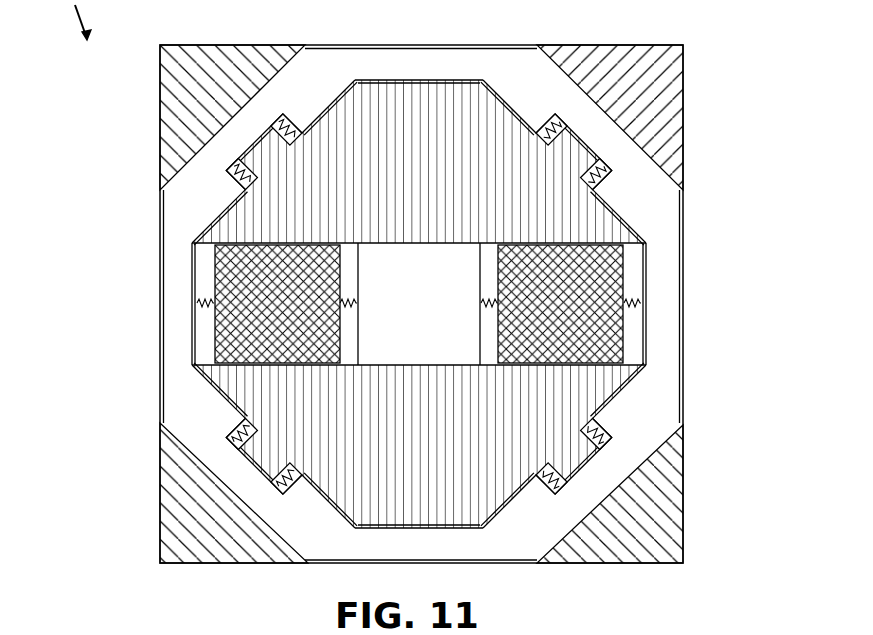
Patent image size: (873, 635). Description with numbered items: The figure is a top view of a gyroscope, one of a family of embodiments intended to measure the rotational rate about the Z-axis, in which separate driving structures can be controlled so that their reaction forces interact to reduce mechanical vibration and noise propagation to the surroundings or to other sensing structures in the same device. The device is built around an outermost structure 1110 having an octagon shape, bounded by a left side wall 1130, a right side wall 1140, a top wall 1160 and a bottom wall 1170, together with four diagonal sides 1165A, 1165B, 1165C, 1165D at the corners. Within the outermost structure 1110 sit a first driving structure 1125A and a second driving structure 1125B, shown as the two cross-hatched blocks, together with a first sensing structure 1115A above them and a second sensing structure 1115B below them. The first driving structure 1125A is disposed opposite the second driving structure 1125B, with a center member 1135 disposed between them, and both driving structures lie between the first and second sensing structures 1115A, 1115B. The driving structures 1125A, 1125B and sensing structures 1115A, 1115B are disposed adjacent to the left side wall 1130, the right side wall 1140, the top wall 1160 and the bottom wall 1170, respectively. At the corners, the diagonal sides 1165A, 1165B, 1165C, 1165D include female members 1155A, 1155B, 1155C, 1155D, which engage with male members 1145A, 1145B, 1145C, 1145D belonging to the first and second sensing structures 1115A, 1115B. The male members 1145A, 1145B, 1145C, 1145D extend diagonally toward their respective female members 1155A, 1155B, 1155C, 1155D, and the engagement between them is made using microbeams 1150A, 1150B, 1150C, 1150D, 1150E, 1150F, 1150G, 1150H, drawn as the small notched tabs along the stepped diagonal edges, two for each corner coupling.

The outermost structure 1110 is at (377, 58).
The first sensing structure 1115A is at (450, 110).
The second sensing structure 1115B is at (445, 525).
The first driving structure 1125A is at (315, 284).
The second driving structure 1125B is at (600, 284).
The left side wall 1130 is at (180, 308).
The center member 1135 is at (450, 312).
The right side wall 1140 is at (660, 298).
The male member 1145A is at (278, 162).
The male member 1145B is at (567, 158).
The male member 1145C is at (570, 457).
The male member 1145D is at (265, 462).
The microbeam 1150A is at (250, 172).
The microbeam 1150B is at (290, 133).
The microbeam 1150C is at (555, 130).
The microbeam 1150D is at (587, 177).
The microbeam 1150E is at (582, 427).
The microbeam 1150F is at (550, 477).
The microbeam 1150G is at (250, 437).
The microbeam 1150H is at (287, 483).
The female member 1155A is at (230, 160).
The female member 1155B is at (562, 108).
The female member 1155C is at (628, 440).
The female member 1155D is at (240, 455).
The top wall 1160 is at (407, 60).
The diagonal side 1165A is at (300, 76).
The diagonal side 1165B is at (635, 177).
The diagonal side 1165C is at (545, 528).
The diagonal side 1165D is at (293, 530).
The bottom wall 1170 is at (460, 543).